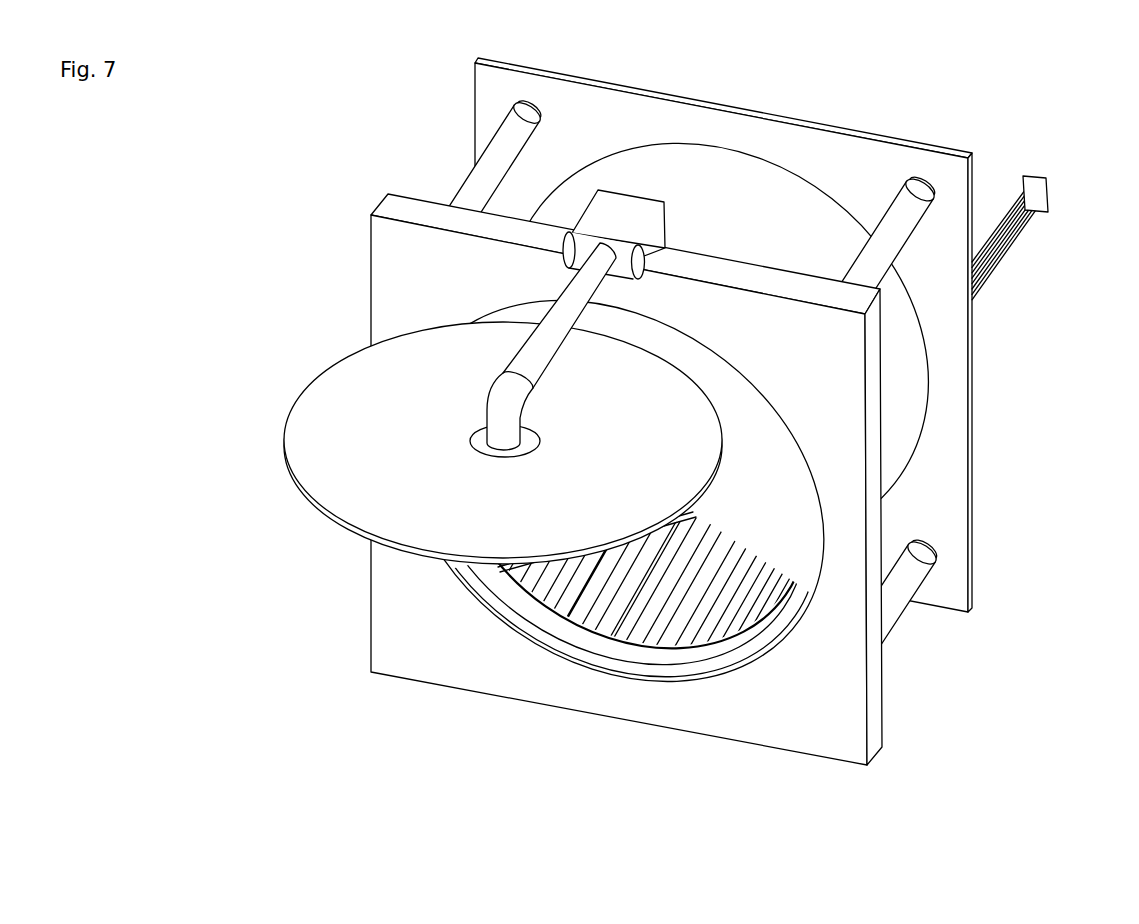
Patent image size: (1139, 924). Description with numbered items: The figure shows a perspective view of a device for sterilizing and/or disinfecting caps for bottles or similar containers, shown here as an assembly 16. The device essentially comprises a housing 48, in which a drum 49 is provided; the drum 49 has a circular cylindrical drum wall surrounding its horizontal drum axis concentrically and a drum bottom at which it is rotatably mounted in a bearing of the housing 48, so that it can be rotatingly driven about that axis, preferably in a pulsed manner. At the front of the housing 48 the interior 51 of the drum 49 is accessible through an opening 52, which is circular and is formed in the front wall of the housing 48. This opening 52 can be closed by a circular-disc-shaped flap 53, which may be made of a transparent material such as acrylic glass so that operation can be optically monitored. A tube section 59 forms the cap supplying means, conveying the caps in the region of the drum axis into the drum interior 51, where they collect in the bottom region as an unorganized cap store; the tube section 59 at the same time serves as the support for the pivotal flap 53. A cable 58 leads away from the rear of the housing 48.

The assembly 16 is at (659, 427).
The back plate 48 is at (960, 502).
The slot 49 is at (577, 603).
The grid 51 is at (707, 620).
The ring 52 is at (605, 650).
The disk 53 is at (347, 403).
The cable 58 is at (1007, 243).
The arm 59 is at (547, 338).